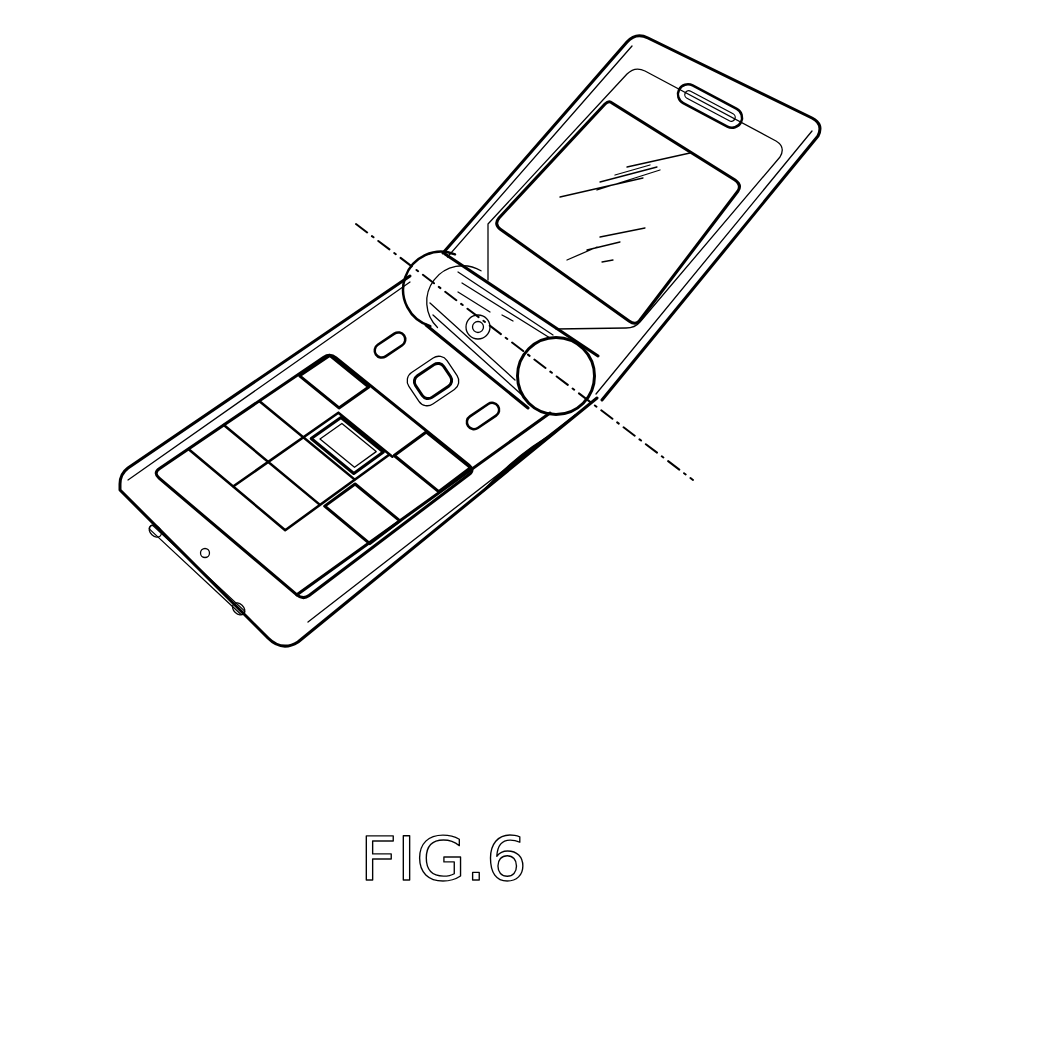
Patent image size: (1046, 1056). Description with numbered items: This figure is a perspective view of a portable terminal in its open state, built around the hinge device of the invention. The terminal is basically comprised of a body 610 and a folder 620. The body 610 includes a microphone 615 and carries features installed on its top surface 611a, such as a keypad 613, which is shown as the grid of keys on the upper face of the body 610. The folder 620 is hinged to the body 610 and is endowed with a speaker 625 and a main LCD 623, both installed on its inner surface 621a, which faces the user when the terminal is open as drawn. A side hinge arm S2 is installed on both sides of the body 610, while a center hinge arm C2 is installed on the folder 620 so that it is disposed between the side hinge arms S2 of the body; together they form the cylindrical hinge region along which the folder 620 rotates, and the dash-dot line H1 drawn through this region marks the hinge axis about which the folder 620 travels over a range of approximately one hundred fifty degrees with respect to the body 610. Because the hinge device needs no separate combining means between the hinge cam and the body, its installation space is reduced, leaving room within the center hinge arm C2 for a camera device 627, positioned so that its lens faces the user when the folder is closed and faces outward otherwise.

The body 610 is at (380, 605).
The top surface 611a is at (487, 457).
The keypad 613 is at (221, 443).
The microphone 615 is at (180, 563).
The folder 620 is at (718, 290).
The inner surface 621a is at (760, 165).
The main LCD 623 is at (580, 160).
The speaker 625 is at (702, 97).
The camera device 627 is at (444, 278).
The center hinge arm C2 is at (430, 298).
The side hinge arm S2 is at (572, 373).
The hinge axis H1 is at (690, 484).